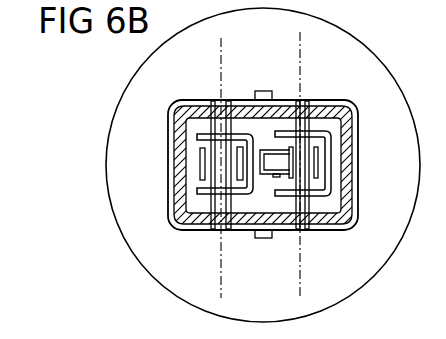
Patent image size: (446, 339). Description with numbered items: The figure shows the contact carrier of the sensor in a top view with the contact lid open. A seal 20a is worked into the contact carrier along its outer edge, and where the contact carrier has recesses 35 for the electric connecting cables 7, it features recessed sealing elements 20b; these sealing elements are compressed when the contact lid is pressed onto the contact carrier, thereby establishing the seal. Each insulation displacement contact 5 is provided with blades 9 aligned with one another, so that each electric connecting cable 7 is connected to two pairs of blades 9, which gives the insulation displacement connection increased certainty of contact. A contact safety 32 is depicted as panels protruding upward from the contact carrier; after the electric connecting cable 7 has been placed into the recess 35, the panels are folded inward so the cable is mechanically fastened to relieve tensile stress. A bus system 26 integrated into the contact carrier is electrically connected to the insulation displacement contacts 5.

The insulation displacement contact 5 is at (190, 101).
The blades 9 is at (210, 101).
The bus system 26 is at (257, 91).
The recess 35 is at (329, 103).
The contact safety 32 is at (200, 167).
The seal 20a is at (170, 184).
The recessed sealing element 20b is at (225, 232).
The electric connecting cable 7 is at (221, 285).